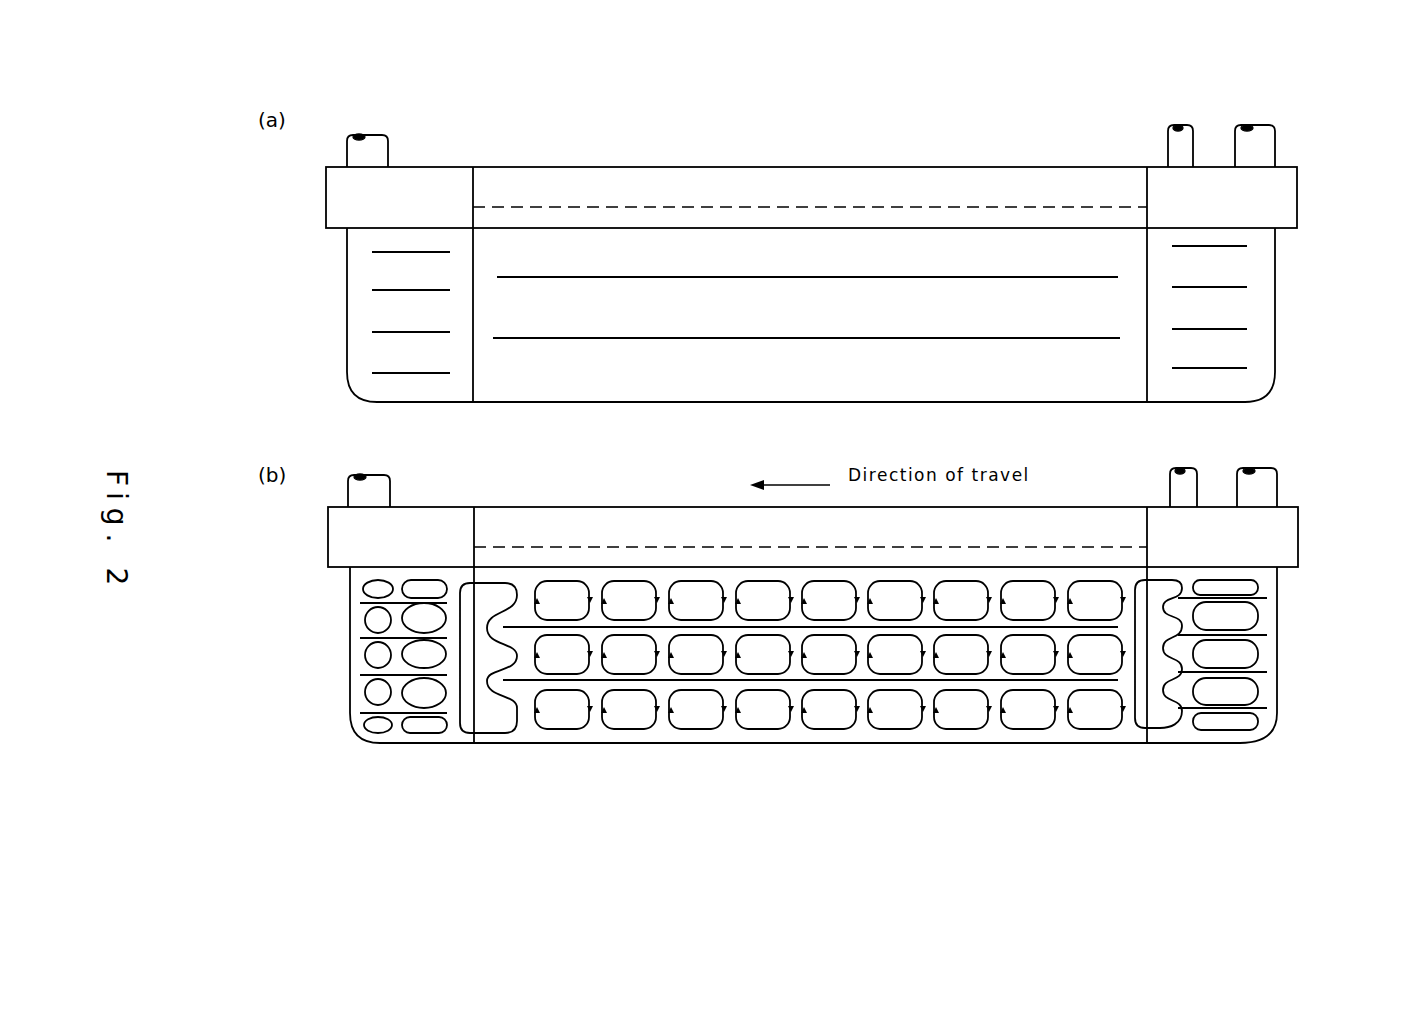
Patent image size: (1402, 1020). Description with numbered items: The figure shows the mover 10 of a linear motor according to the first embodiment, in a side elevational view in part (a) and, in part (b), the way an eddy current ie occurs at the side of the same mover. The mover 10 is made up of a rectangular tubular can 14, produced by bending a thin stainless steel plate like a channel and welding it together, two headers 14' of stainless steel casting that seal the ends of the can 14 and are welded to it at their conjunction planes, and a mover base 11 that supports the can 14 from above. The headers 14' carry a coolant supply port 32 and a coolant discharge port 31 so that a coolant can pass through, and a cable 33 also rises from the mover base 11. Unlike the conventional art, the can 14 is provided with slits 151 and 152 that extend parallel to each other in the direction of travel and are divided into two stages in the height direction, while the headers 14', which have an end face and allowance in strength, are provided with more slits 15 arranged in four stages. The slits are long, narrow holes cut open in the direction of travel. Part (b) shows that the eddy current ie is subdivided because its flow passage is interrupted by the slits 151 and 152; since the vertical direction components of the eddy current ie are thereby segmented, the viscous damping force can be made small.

The mover 10 is at (632, 166).
The mover base 11 is at (554, 169).
The can 14 is at (812, 485).
The header 14' is at (827, 489).
The slit 15 is at (430, 374).
The slit 151 is at (543, 340).
The slit 152 is at (613, 278).
The coolant discharge port 31 is at (377, 151).
The coolant supply port 32 is at (1265, 148).
The cable 33 is at (1166, 143).
The eddy current ie is at (573, 730).